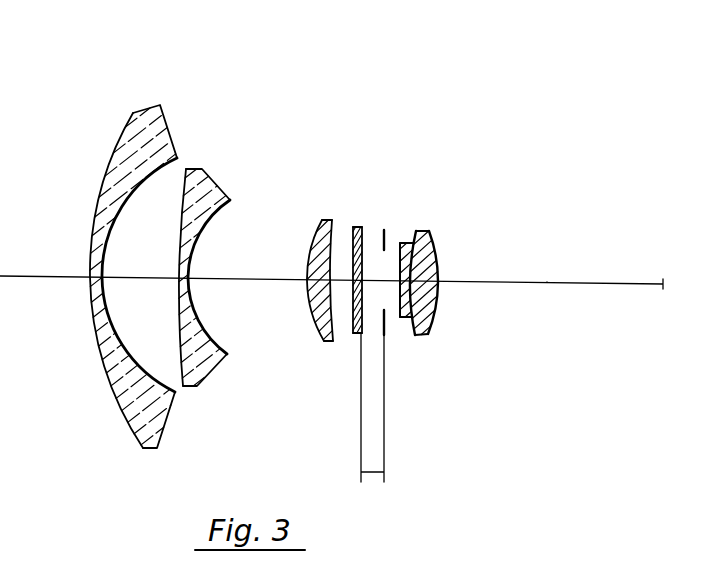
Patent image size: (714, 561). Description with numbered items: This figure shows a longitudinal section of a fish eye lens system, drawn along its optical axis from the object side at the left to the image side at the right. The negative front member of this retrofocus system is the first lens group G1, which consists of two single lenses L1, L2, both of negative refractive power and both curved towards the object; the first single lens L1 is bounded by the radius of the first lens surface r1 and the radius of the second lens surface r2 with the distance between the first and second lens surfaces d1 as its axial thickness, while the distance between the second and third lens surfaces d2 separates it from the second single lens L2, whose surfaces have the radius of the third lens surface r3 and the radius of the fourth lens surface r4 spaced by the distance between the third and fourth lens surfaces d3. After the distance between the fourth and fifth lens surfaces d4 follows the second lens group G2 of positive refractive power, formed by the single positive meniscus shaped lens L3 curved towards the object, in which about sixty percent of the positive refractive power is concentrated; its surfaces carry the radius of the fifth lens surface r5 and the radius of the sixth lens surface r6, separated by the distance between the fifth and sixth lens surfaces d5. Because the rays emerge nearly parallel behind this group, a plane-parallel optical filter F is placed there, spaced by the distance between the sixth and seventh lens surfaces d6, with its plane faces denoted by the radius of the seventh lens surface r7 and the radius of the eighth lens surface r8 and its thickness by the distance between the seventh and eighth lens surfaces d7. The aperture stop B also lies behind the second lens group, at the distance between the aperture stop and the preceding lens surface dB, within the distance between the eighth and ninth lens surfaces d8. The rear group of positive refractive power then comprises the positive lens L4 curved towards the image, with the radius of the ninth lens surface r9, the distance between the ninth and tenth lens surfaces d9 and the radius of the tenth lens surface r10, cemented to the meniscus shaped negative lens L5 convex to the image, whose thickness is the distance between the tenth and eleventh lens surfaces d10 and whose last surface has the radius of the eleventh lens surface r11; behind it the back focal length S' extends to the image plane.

The first lens group G1 is at (262, 60).
The second lens group G2 is at (538, 77).
The single lens L1 is at (152, 116).
The single lens L2 is at (211, 190).
The positive meniscus shaped lens L3 is at (328, 232).
The positive lens L4 is at (413, 231).
The meniscus shaped negative lens L5 is at (440, 252).
The optical filter F is at (359, 227).
The aperture stop B is at (384, 230).
The back focal length S' is at (562, 255).
The radius of the first lens surface r1 is at (130, 132).
The radius of the second lens surface r2 is at (167, 126).
The radius of the third lens surface r3 is at (184, 172).
The radius of the fourth lens surface r4 is at (230, 207).
The radius of the fifth lens surface r5 is at (318, 233).
The radius of the sixth lens surface r6 is at (334, 222).
The radius of the seventh lens surface r7 is at (356, 228).
The radius of the eighth lens surface r8 is at (363, 233).
The radius of the ninth lens surface r9 is at (400, 244).
The radius of the tenth lens surface r10 is at (418, 247).
The radius of the eleventh lens surface r11 is at (443, 262).
The distance between the first and second lens surfaces d1 is at (93, 280).
The distance between the second and third lens surfaces d2 is at (138, 280).
The distance between the third and fourth lens surfaces d3 is at (180, 282).
The distance between the fourth and fifth lens surfaces d4 is at (255, 282).
The distance between the fifth and sixth lens surfaces d5 is at (312, 305).
The distance between the sixth and seventh lens surfaces d6 is at (342, 282).
The distance between the seventh and eighth lens surfaces d7 is at (357, 334).
The distance between the eighth and ninth lens surfaces d8 is at (377, 282).
The distance between the ninth and tenth lens surfaces d9 is at (410, 321).
The distance between the tenth and eleventh lens surfaces d10 is at (430, 330).
The distance between the aperture stop and the preceding lens surface dB is at (373, 472).